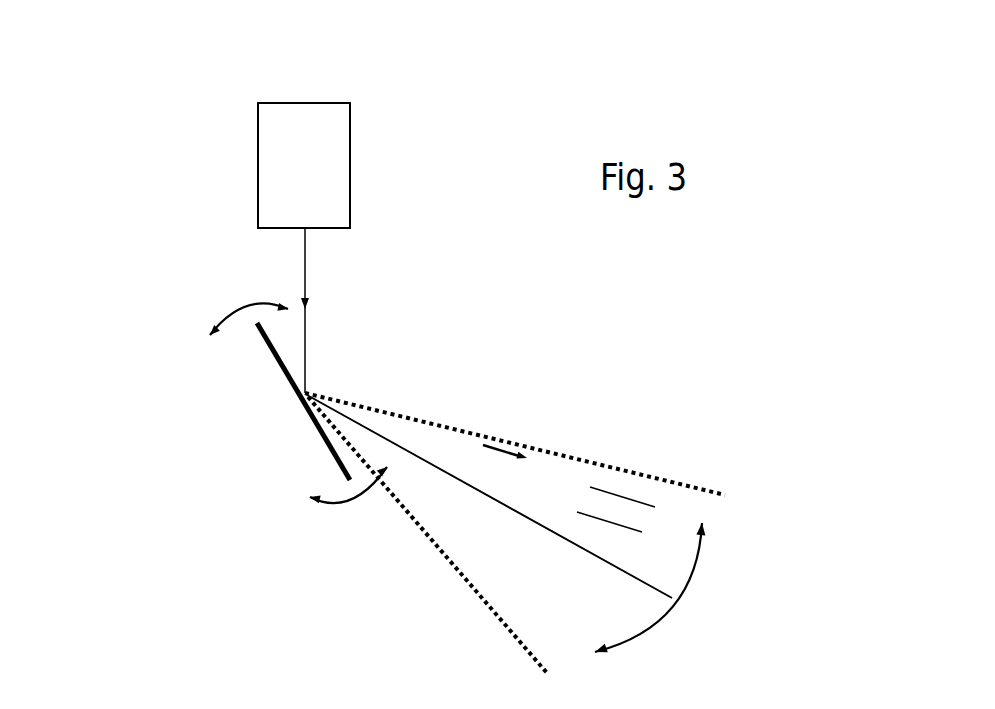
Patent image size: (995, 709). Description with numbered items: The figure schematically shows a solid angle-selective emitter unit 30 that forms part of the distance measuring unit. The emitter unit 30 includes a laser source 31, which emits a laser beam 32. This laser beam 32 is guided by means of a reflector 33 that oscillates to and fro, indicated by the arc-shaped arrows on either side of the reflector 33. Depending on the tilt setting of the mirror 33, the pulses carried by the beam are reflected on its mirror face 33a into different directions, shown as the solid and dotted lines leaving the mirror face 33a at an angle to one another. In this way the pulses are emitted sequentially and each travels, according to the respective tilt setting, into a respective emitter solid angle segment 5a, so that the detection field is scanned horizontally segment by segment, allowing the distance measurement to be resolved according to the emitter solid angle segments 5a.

The solid angle-selective emitter unit 30 is at (180, 83).
The laser source 31 is at (320, 143).
The laser beam 32 is at (307, 275).
The reflector 33 is at (288, 368).
The mirror face 33a is at (278, 352).
The emitter solid angle segment 5a is at (618, 518).